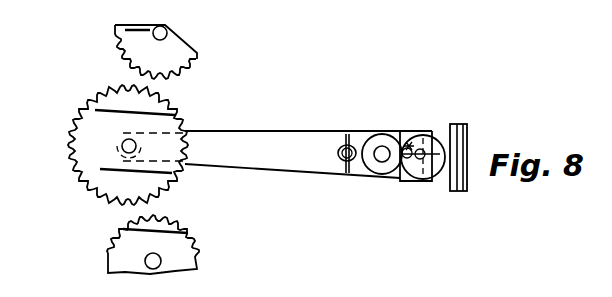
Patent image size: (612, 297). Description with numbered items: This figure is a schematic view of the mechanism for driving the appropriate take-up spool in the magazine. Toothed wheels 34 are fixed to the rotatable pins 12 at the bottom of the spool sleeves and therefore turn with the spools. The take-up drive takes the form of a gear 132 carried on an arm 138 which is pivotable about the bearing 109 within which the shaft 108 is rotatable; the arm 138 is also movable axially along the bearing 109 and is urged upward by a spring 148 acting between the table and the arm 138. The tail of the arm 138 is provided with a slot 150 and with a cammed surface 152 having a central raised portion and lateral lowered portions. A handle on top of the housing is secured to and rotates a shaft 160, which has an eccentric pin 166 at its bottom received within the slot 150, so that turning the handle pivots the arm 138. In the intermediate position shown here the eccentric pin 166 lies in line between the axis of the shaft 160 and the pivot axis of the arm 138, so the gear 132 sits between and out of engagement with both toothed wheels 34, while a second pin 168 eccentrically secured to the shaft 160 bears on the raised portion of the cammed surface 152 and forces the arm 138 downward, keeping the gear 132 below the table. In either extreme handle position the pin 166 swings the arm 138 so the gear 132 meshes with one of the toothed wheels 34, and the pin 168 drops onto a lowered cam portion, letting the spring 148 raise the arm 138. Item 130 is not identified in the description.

The rotatable pin 12 is at (167, 31).
The toothed wheel 34 is at (186, 63).
The large gear 130 is at (122, 143).
The gear 132 is at (72, 158).
The arm 138 is at (288, 136).
The spring 148 is at (351, 138).
The bearing 109 is at (382, 146).
The shaft 108 is at (380, 160).
The cammed surface 152 is at (421, 138).
The second pin 168 is at (408, 143).
The eccentric pin 166 is at (425, 162).
The shaft 160 is at (430, 168).
The slot 150 is at (446, 145).